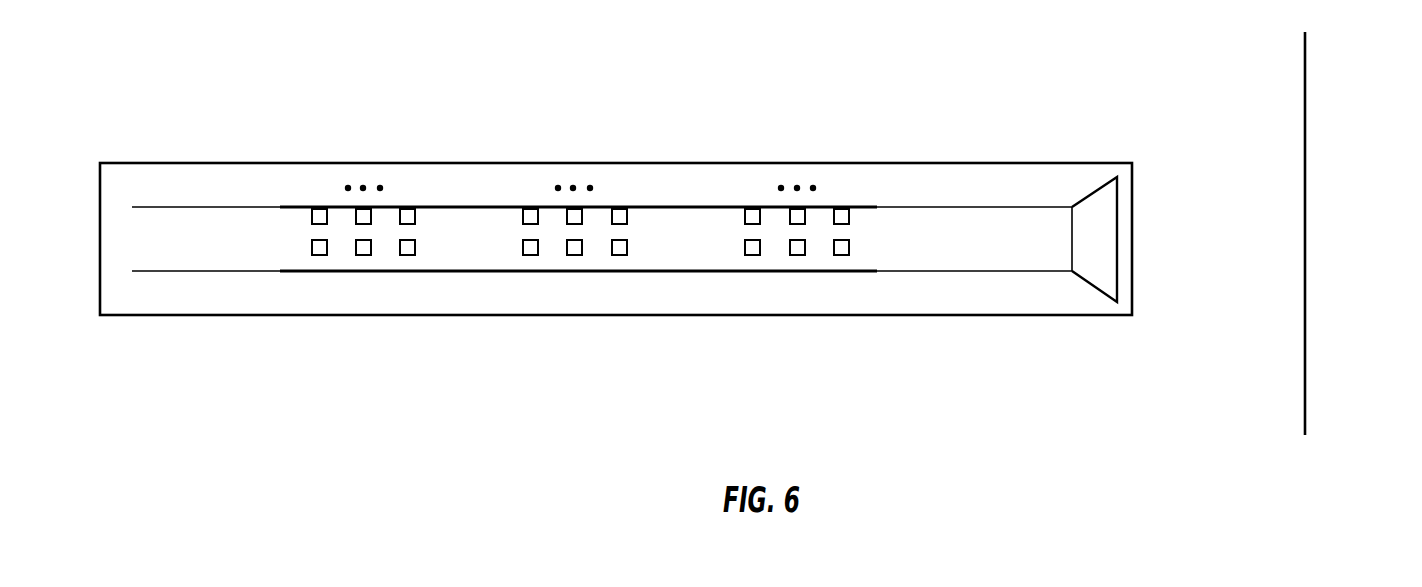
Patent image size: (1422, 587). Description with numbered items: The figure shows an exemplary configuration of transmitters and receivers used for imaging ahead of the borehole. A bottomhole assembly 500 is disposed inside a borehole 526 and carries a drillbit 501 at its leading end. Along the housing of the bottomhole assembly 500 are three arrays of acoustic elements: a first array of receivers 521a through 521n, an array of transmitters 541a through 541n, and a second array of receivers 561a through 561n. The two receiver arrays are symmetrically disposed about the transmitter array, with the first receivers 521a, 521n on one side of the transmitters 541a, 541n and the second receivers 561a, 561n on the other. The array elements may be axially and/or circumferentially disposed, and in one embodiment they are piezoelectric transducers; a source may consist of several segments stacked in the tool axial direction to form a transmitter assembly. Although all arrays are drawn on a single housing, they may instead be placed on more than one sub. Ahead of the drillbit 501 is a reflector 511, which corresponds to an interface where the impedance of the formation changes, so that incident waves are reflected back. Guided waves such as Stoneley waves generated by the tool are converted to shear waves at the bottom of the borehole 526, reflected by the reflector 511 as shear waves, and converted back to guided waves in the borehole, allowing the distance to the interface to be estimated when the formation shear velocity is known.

The bottomhole assembly 500 is at (542, 272).
The drillbit 501 is at (1090, 283).
The reflector 511 is at (1306, 233).
The borehole 526 is at (238, 163).
The first array receiver 521a is at (318, 211).
The first array receiver 521n is at (408, 211).
The transmitter 541a is at (531, 213).
The transmitter 541n is at (618, 213).
The second array receiver 561a is at (752, 211).
The second array receiver 561n is at (842, 211).